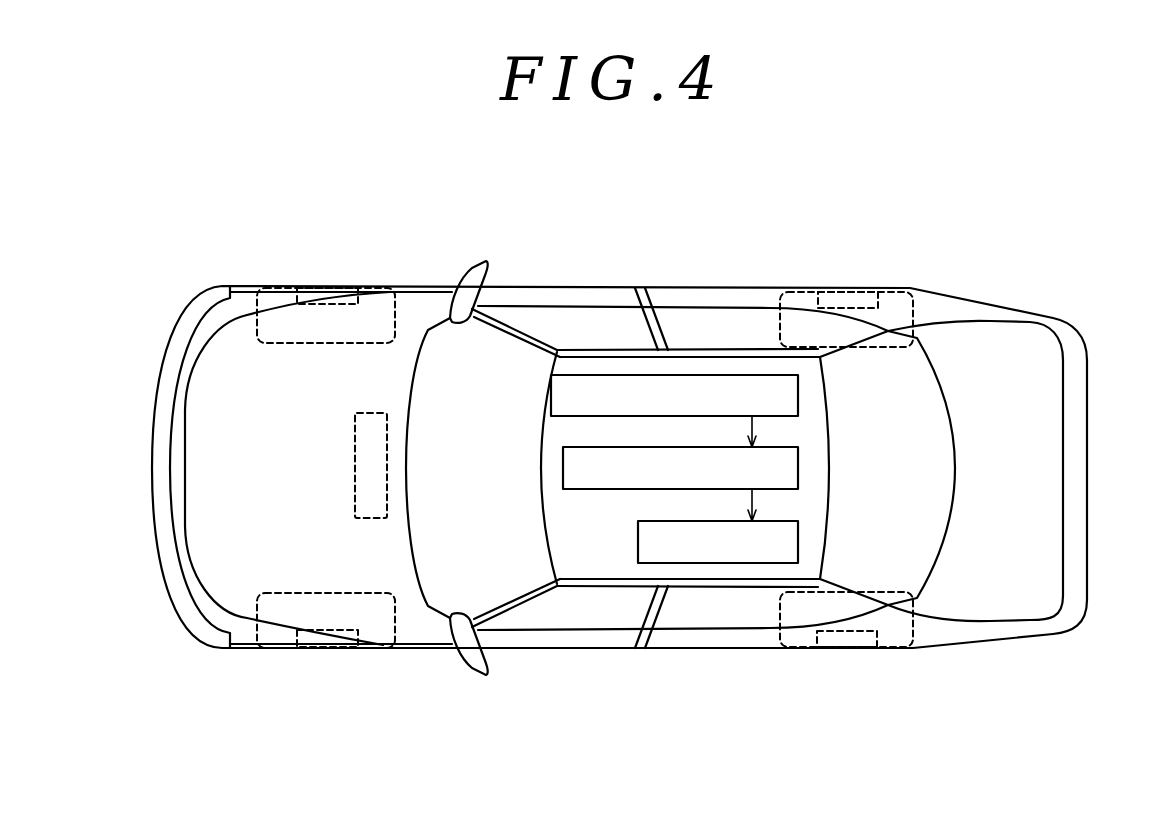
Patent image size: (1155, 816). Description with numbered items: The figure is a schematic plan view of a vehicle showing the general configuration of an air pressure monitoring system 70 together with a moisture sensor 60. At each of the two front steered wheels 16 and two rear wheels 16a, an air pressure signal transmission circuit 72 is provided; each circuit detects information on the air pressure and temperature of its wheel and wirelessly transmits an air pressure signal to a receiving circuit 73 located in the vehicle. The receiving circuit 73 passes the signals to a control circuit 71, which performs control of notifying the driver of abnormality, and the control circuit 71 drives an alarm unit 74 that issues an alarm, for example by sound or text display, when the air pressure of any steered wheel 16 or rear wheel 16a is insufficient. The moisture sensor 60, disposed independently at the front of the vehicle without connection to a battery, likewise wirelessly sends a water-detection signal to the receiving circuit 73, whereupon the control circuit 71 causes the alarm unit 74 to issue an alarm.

The steered wheel 16 is at (397, 312).
The rear wheel 16a is at (915, 313).
The moisture sensor 60 is at (355, 452).
The air pressure monitoring system 70 is at (813, 255).
The control circuit 71 is at (798, 467).
The air pressure signal transmission circuit 72 is at (295, 297).
The receiving circuit 73 is at (798, 392).
The alarm unit 74 is at (798, 540).